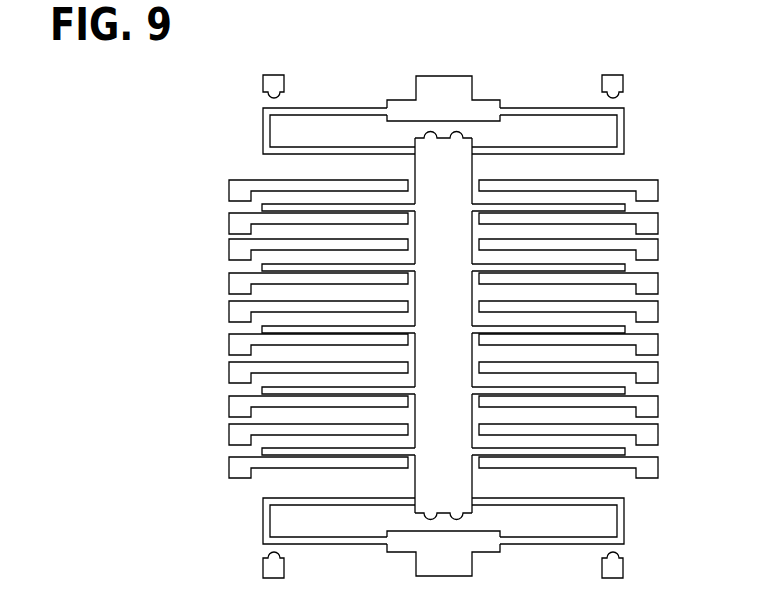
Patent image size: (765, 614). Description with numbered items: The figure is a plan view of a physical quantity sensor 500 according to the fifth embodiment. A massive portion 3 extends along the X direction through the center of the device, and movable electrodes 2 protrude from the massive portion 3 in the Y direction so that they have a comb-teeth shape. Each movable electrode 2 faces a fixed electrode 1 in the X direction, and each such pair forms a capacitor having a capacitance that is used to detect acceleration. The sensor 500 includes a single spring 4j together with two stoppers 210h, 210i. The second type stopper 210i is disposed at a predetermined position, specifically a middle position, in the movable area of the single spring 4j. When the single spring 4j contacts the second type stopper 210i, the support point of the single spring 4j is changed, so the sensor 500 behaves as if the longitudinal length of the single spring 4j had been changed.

The physical quantity sensor 500 is at (457, 62).
The fixed electrode 1 is at (276, 363).
The movable electrode 2 is at (292, 386).
The massive portion 3 is at (453, 188).
The single spring 4j is at (343, 148).
The stopper 210h is at (474, 109).
The second type stopper 210i is at (272, 90).